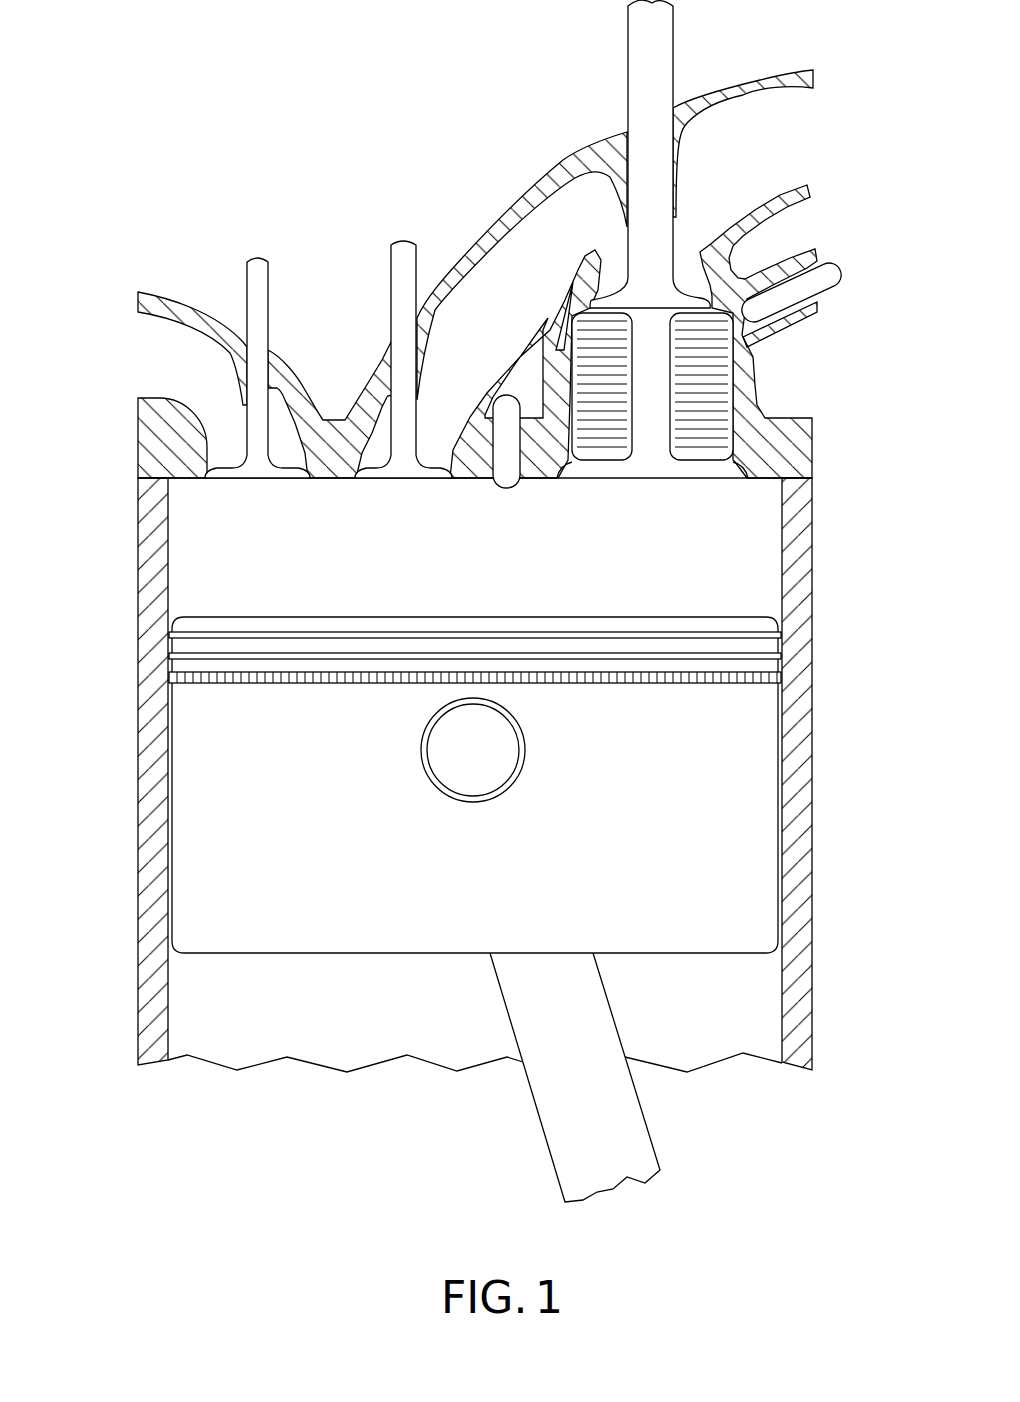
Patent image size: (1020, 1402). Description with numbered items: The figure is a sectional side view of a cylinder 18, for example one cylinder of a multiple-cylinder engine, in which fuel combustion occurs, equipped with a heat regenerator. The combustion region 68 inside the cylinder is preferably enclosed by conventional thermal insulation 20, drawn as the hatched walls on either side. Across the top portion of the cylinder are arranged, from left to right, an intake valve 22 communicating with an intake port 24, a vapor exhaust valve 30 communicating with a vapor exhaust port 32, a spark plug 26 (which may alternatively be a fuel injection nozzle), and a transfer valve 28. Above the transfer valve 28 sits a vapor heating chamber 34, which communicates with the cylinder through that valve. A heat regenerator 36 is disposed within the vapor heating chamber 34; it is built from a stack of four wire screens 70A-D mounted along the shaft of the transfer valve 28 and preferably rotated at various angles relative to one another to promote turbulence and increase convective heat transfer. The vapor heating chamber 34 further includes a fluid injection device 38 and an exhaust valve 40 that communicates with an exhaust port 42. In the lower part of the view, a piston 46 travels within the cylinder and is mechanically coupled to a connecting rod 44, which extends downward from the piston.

The cylinder 18 is at (137, 673).
The thermal insulation 20 is at (815, 757).
The intake valve 22 is at (256, 480).
The intake port 24 is at (199, 386).
The spark plug 26 is at (507, 489).
The transfer valve 28 is at (652, 480).
The vapor exhaust valve 30 is at (403, 480).
The vapor exhaust port 32 is at (484, 351).
The vapor heating chamber 34 is at (657, 175).
The heat regenerator 36 is at (714, 386).
The fluid injection device 38 is at (852, 263).
The exhaust valve 40 is at (670, 300).
The exhaust port 42 is at (778, 163).
The connecting rod 44 is at (602, 1093).
The piston 46 is at (497, 881).
The combustion region 68 is at (475, 536).
The wire screens 70A-D is at (712, 408).